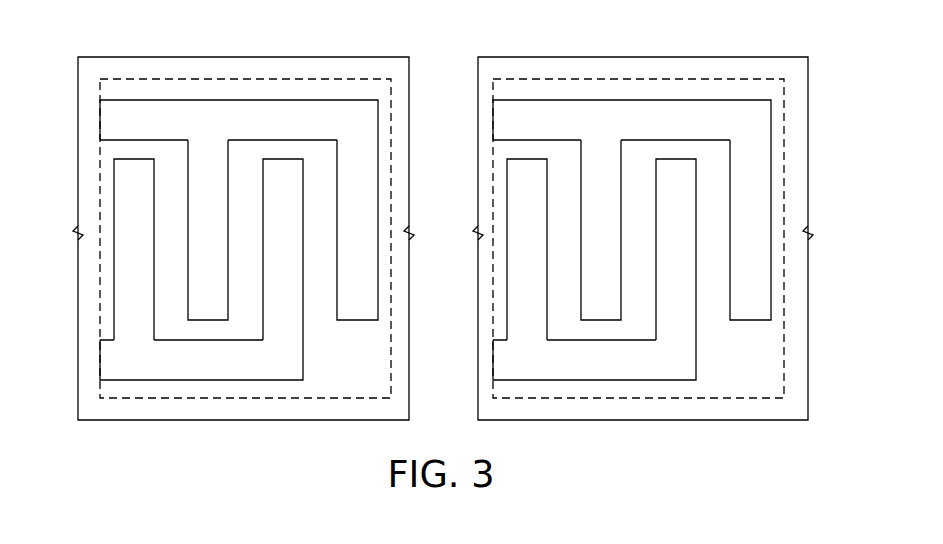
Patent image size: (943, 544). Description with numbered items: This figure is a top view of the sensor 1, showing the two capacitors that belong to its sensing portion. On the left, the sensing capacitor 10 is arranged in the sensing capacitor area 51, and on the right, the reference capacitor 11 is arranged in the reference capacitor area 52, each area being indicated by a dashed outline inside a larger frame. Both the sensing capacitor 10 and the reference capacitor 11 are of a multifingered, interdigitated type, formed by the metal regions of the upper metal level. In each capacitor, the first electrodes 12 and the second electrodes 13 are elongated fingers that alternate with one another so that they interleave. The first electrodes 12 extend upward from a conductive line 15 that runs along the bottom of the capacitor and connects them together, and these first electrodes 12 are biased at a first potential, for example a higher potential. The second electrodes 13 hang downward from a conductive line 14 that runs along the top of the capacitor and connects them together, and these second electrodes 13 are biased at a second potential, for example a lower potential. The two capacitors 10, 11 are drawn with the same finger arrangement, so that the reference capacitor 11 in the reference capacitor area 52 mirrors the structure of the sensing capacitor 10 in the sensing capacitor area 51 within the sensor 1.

The touch sensor 1 is at (92, 46).
The sensing capacitor 10 is at (390, 197).
The reference capacitor 11 is at (493, 281).
The first electrodes 12 is at (121, 251).
The second electrodes 13 is at (196, 251).
The conductive line 14 is at (271, 131).
The conductive line 15 is at (195, 371).
The sensing capacitor area 51 is at (392, 370).
The reference capacitor area 52 is at (493, 109).